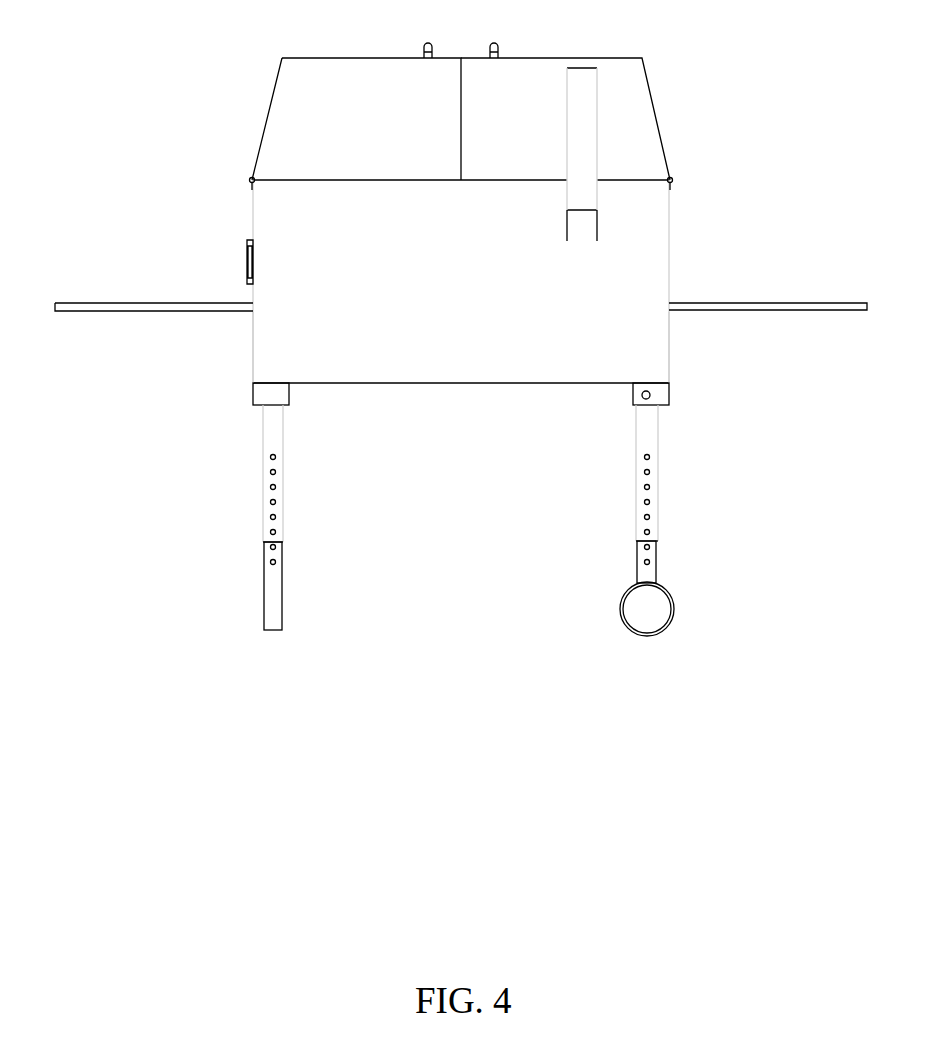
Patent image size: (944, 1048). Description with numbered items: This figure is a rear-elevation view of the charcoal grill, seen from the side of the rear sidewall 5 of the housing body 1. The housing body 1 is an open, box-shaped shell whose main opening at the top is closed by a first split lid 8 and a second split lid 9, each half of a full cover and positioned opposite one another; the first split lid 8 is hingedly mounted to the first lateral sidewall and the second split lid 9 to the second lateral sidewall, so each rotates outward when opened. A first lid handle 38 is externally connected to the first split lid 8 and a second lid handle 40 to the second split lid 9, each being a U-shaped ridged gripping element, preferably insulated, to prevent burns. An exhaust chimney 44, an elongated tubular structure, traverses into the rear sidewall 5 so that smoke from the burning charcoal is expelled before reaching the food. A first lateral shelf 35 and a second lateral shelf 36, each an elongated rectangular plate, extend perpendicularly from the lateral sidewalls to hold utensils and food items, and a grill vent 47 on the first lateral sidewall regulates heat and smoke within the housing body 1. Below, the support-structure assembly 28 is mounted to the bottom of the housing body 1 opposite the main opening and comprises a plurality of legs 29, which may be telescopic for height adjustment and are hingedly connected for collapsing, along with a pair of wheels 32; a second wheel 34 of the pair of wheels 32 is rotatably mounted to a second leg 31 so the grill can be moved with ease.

The housing body 1 is at (216, 242).
The rear sidewall 5 is at (468, 314).
The first split lid 8 is at (277, 108).
The second split lid 9 is at (638, 95).
The support-structure assembly 28 is at (447, 509).
The plurality of legs 29 is at (277, 472).
The second leg 31 is at (651, 472).
The pair of wheels 32 is at (655, 609).
The second wheel 34 is at (679, 609).
The first lateral shelf 35 is at (60, 306).
The second lateral shelf 36 is at (868, 310).
The first lid handle 38 is at (424, 47).
The second lid handle 40 is at (498, 48).
The exhaust chimney 44 is at (590, 146).
The grill vent 47 is at (247, 262).